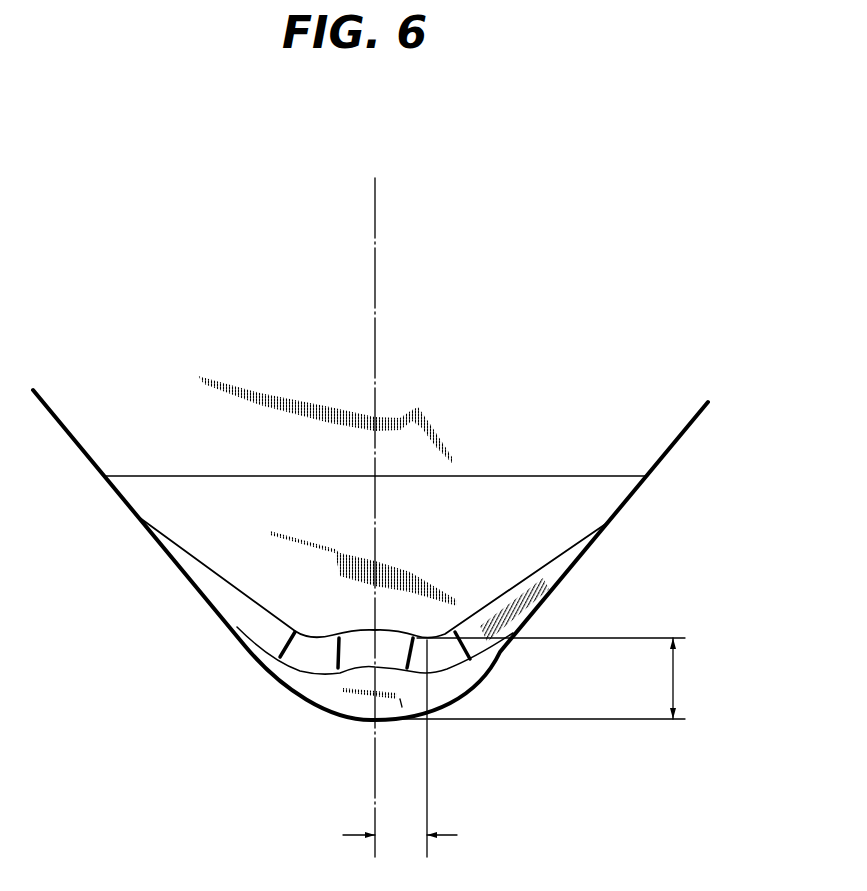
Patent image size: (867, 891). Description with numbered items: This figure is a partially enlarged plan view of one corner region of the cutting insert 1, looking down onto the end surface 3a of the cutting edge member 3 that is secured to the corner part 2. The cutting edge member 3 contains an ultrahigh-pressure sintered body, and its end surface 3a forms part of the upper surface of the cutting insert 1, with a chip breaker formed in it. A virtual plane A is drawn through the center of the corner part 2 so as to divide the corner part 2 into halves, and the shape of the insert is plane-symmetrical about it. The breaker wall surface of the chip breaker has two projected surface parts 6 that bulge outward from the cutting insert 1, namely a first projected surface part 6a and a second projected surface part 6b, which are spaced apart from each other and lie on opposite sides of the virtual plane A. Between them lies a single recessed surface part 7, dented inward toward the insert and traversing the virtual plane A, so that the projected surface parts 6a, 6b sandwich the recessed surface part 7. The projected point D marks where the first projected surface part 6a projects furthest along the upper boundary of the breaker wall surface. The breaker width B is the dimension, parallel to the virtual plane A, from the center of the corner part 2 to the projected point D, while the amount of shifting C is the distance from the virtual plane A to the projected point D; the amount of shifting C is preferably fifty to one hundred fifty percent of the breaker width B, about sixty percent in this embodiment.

The virtual plane A is at (373, 233).
The cutting insert 1 is at (505, 507).
The end surface 3a is at (330, 515).
The cutting edge member 3 is at (303, 563).
The corner part 2 is at (360, 652).
The recessed surface part 7 is at (360, 653).
The projected surface part 6 is at (322, 655).
The second projected surface part 6b is at (312, 658).
The first projected surface part 6a is at (442, 655).
The projected point D is at (425, 628).
The breaker width B is at (535, 678).
The amount of shifting C is at (400, 823).